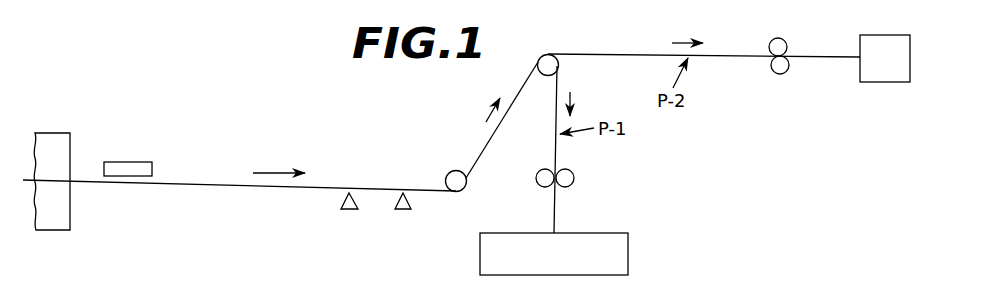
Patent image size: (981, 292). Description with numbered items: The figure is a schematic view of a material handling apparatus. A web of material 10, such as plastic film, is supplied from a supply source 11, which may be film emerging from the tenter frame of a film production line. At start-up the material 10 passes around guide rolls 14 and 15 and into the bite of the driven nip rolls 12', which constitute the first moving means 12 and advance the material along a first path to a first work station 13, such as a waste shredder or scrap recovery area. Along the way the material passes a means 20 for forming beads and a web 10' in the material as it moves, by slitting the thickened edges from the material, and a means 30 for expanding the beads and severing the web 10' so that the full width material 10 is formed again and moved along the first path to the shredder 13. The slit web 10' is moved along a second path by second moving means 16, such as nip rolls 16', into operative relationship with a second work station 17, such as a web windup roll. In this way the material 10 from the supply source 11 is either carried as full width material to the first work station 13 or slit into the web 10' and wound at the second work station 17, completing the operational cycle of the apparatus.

The web of material 10 is at (239, 208).
The web 10' is at (704, 42).
The supply source 11 is at (50, 133).
The first moving means 12 is at (590, 181).
The nip rolls 12' is at (554, 169).
The first work station 13 is at (554, 254).
The guide roll 14 is at (452, 171).
The guide roll 15 is at (537, 58).
The second moving means 16 is at (805, 77).
The nip rolls 16' is at (768, 74).
The second work station 17 is at (885, 58).
The means for forming the beads and the web 20 is at (349, 210).
The means for expanding the beads and severing the web 30 is at (403, 210).